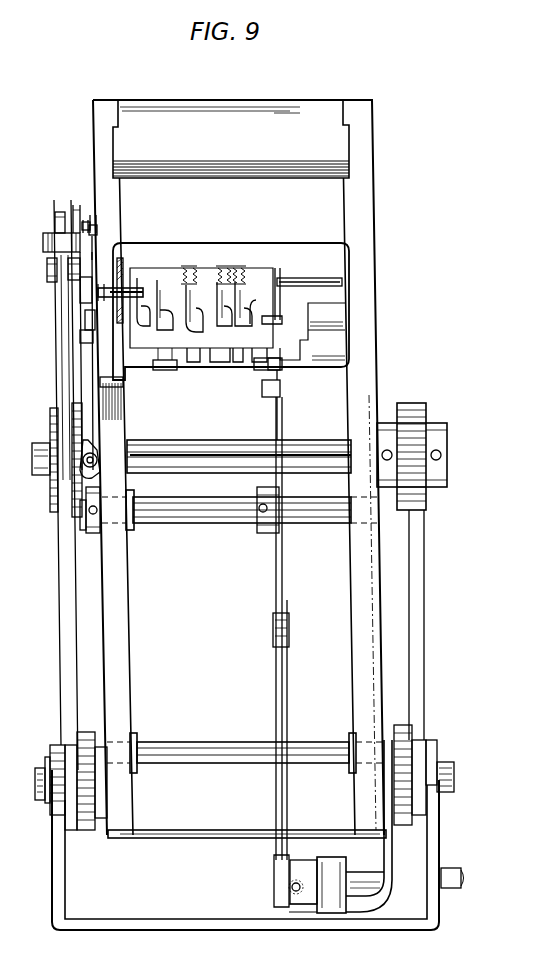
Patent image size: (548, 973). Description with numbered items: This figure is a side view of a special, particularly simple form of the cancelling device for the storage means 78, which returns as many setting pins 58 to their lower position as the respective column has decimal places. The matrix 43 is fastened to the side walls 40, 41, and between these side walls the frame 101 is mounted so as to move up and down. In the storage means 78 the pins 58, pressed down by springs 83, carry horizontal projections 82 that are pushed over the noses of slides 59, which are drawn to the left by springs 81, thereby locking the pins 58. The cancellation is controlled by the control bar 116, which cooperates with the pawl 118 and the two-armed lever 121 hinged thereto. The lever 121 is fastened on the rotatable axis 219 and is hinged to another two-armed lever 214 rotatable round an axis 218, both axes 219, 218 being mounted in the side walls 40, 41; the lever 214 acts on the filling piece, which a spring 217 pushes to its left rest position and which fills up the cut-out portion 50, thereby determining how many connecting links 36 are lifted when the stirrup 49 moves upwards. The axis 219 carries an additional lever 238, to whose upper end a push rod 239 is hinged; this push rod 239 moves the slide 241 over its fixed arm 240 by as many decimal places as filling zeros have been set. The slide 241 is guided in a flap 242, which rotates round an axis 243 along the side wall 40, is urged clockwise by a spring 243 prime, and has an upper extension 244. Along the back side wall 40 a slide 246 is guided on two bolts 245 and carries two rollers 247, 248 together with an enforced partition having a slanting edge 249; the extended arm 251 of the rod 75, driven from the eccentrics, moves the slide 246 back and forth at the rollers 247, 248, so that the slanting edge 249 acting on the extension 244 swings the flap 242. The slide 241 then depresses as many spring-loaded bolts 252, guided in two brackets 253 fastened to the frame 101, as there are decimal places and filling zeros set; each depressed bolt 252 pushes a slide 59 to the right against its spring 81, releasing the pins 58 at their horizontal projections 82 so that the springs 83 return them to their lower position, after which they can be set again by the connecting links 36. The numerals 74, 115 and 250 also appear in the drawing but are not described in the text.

The connecting links 36 is at (450, 868).
The side wall 40 is at (125, 577).
The side wall 41 is at (364, 216).
The matrix 43 is at (306, 100).
The stirrup 49 is at (432, 823).
The cut-out portion 50 is at (300, 913).
The pins 58 is at (240, 264).
The slides 59 is at (278, 300).
The pulley shaft 74 is at (36, 789).
The rod 75 is at (60, 643).
The storage means 78 is at (268, 278).
The springs 81 is at (266, 318).
The horizontal projections 82 is at (196, 308).
The springs 83 is at (193, 264).
The frame 101 is at (223, 328).
The stop block 115 is at (167, 370).
The control bar 116 is at (258, 366).
The pawl 118 is at (283, 384).
The two-armed lever 121 is at (283, 557).
The two-armed lever 214 is at (285, 673).
The spring 217 is at (278, 889).
The axis 218 is at (226, 742).
The axis 219 is at (208, 523).
The lever 238 is at (91, 535).
The push rod 239 is at (75, 368).
The fixed arm 240 is at (80, 338).
The slide 241 is at (87, 307).
The flap 242 is at (70, 284).
The axis 243 is at (96, 460).
The upper extension 244 is at (85, 220).
The bolts 245 is at (95, 240).
The slide 246 is at (75, 216).
The roller 247 is at (46, 240).
The roller 248 is at (48, 264).
The slanting edge 249 is at (140, 208).
The rod 250 is at (86, 224).
The extended arm 251 is at (53, 213).
The bolts 252 is at (135, 288).
The brackets 253 is at (123, 258).